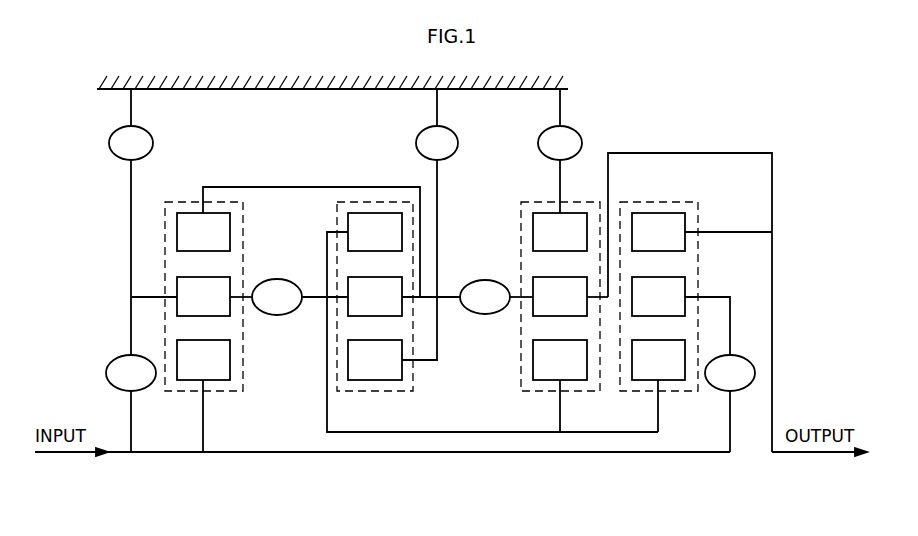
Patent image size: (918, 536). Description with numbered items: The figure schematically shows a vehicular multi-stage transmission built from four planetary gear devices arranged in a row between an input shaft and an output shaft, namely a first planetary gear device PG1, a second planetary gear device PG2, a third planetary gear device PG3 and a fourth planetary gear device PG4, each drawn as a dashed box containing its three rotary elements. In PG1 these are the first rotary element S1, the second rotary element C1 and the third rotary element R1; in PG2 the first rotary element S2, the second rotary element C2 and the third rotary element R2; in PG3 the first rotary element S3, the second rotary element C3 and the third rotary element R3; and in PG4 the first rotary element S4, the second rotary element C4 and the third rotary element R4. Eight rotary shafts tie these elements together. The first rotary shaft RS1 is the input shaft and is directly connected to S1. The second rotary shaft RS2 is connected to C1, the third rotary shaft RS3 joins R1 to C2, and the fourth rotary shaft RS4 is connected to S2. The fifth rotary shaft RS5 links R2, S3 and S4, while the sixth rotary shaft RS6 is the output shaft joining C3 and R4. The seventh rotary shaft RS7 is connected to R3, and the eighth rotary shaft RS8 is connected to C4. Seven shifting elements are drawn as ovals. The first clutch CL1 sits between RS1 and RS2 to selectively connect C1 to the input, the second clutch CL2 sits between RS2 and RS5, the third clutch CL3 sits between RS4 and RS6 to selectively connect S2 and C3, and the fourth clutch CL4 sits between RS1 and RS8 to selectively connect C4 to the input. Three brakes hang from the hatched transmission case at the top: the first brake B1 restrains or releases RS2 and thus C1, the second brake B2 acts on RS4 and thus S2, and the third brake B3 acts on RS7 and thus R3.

The first brake B1 is at (131, 222).
The second brake B2 is at (437, 124).
The third brake B3 is at (560, 124).
The first clutch CL1 is at (131, 403).
The second clutch CL2 is at (300, 297).
The third clutch CL3 is at (496, 297).
The fourth clutch CL4 is at (730, 403).
The first planetary gear device PG1 is at (187, 202).
The second planetary gear device PG2 is at (413, 388).
The third planetary gear device PG3 is at (540, 201).
The fourth planetary gear device PG4 is at (698, 202).
The third rotary element of the first planetary gear device R1 is at (203, 232).
The third rotary element of the second planetary gear device R2 is at (375, 232).
The third rotary element of the third planetary gear device R3 is at (560, 232).
The third rotary element of the fourth planetary gear device R4 is at (658, 232).
The second rotary element of the first planetary gear device C1 is at (214, 296).
The second rotary element of the second planetary gear device C2 is at (404, 296).
The second rotary element of the third planetary gear device C3 is at (570, 296).
The second rotary element of the fourth planetary gear device C4 is at (658, 296).
The first rotary element of the first planetary gear device S1 is at (203, 360).
The first rotary element of the second planetary gear device S2 is at (375, 360).
The first rotary element of the third planetary gear device S3 is at (560, 386).
The first rotary element of the fourth planetary gear device S4 is at (658, 386).
The first rotary shaft RS1 is at (213, 455).
The second rotary shaft RS2 is at (148, 297).
The third rotary shaft RS3 is at (272, 187).
The fourth rotary shaft RS4 is at (437, 333).
The fifth rotary shaft RS5 is at (327, 390).
The sixth rotary shaft RS6 is at (632, 153).
The seventh rotary shaft RS7 is at (561, 178).
The eighth rotary shaft RS8 is at (712, 297).